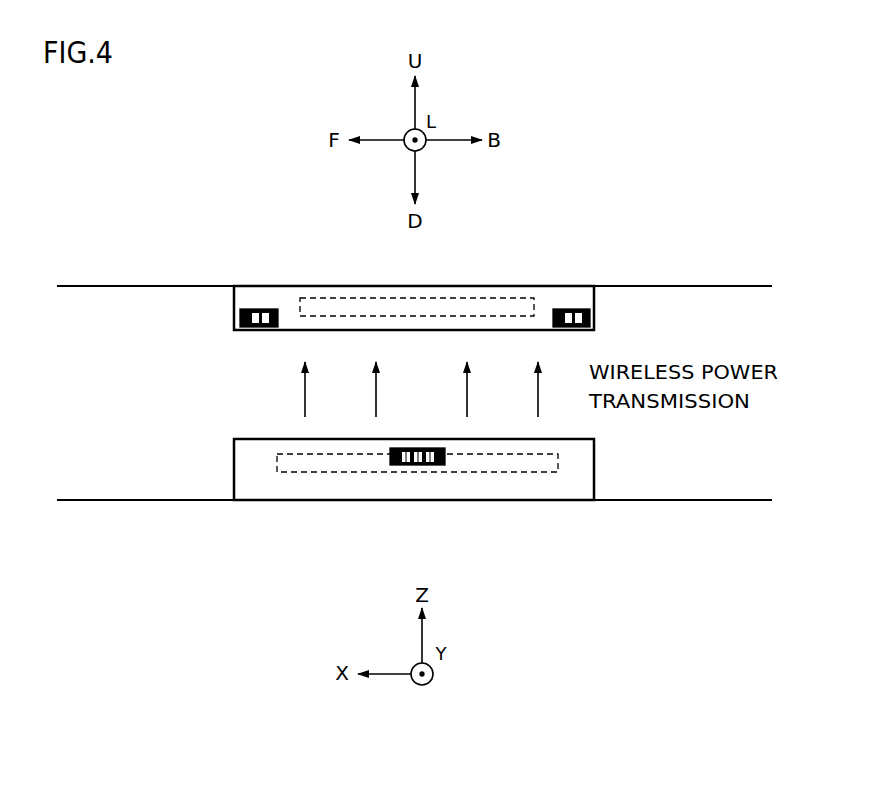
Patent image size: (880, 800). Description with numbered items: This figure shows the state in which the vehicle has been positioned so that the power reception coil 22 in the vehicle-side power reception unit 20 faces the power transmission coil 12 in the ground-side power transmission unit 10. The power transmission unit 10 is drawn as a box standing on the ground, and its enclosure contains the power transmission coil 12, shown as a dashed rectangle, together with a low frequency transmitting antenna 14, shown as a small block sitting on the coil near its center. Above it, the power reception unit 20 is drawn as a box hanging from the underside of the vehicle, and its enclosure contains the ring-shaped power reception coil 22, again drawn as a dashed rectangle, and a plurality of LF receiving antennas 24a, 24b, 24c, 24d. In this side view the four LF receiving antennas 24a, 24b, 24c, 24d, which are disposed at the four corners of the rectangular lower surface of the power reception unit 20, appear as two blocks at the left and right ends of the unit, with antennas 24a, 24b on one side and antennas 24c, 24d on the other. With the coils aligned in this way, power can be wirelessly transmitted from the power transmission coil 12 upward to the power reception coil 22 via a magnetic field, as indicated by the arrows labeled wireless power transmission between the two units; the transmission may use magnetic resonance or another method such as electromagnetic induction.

The power transmission unit 10 is at (628, 474).
The power transmission coil 12 is at (524, 473).
The low frequency (LF) transmitting antenna 14 is at (420, 465).
The power reception unit 20 is at (623, 310).
The power reception coil 22 is at (497, 297).
The LF receiving antenna 24a is at (258, 285).
The LF receiving antenna 24b is at (259, 309).
The LF receiving antenna 24c is at (571, 285).
The LF receiving antenna 24d is at (568, 309).